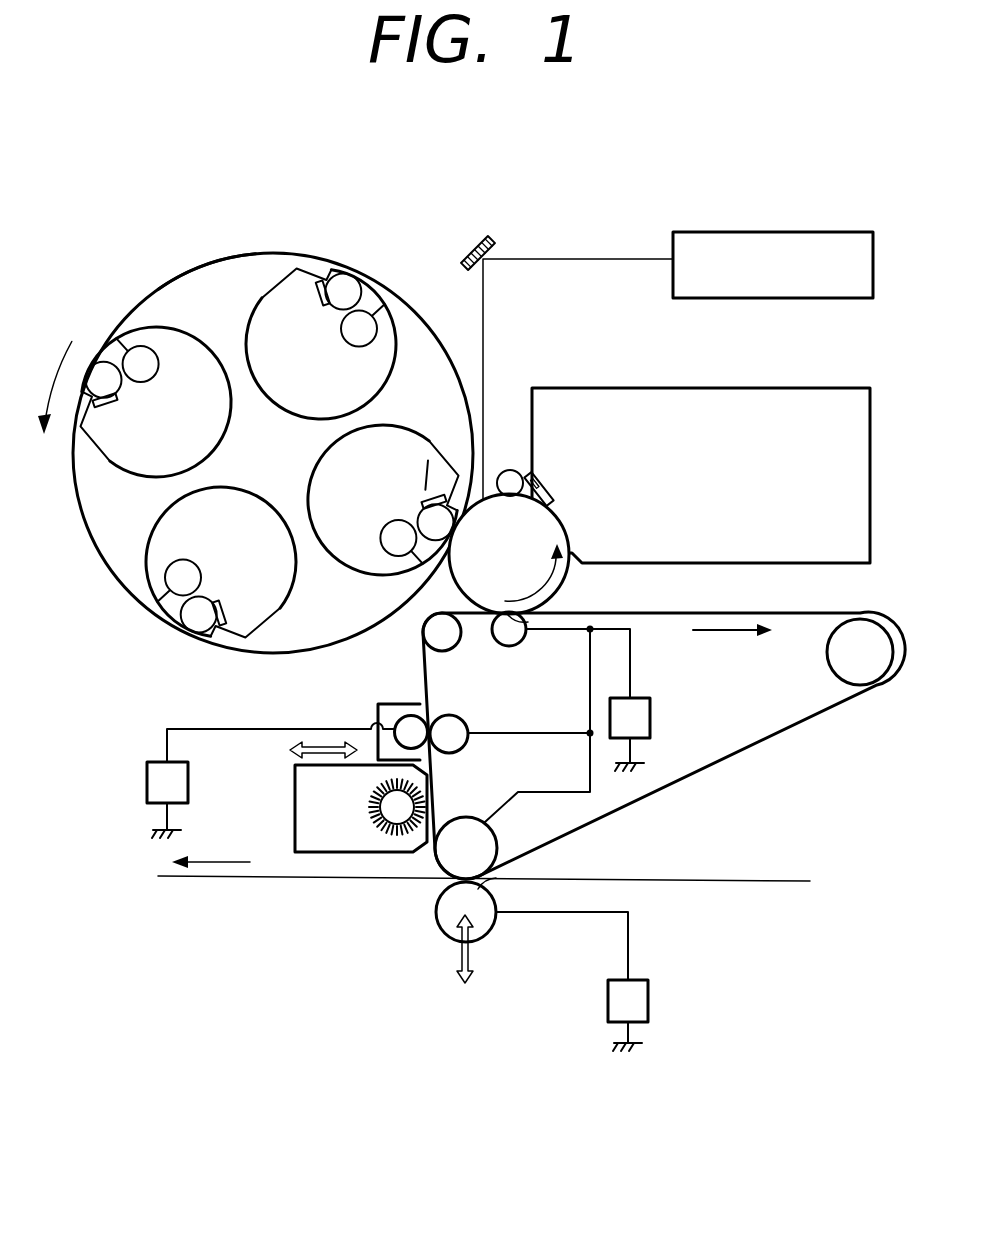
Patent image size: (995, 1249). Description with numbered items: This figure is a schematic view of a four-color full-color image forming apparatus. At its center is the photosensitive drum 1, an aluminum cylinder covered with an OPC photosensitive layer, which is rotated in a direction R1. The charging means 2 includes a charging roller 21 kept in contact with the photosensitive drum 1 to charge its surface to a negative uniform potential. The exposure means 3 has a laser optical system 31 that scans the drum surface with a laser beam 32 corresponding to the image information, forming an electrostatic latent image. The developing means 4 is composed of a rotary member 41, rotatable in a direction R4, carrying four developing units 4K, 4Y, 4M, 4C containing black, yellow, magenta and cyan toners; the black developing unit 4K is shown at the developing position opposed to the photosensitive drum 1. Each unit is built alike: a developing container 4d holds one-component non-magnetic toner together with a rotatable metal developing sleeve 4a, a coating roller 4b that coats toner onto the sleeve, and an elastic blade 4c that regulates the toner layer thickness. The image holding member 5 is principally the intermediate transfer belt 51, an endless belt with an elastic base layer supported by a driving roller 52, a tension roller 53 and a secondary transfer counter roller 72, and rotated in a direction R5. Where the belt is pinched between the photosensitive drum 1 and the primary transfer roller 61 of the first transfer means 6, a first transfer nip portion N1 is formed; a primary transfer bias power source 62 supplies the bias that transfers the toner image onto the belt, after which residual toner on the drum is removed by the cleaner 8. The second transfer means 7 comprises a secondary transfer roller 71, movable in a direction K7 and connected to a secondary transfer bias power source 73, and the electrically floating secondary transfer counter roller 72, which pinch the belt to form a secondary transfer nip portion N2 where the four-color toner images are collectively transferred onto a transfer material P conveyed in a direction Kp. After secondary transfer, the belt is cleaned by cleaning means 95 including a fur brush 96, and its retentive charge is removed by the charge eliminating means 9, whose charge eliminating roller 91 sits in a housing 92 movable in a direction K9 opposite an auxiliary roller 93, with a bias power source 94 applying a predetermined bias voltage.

The photosensitive drum 1 is at (566, 522).
The charging means 2 is at (504, 445).
The charging roller 21 is at (524, 472).
The exposure means 3 is at (667, 336).
The laser optical system 31 is at (806, 231).
The laser beam 32 is at (485, 318).
The developing means 4 is at (178, 262).
The rotary member 41 is at (247, 268).
The yellow developing unit 4Y is at (256, 309).
The cyan developing unit 4C is at (123, 452).
The magenta developing unit 4M is at (170, 535).
The black developing unit 4K is at (360, 504).
The developing sleeve 4a is at (418, 513).
The coating roller 4b is at (378, 528).
The elastic blade 4c is at (428, 458).
The developing container 4d is at (365, 565).
The image holding member 5 is at (664, 728).
The intermediate transfer belt 51 is at (733, 756).
The driving roller 52 is at (831, 669).
The tension roller 53 is at (451, 651).
The first transfer means 6 is at (607, 691).
The primary transfer roller 61 is at (519, 646).
The primary transfer bias power source 62 is at (655, 719).
The second transfer means 7 is at (543, 840).
The secondary transfer roller 71 is at (435, 903).
The secondary transfer counter roller 72 is at (471, 817).
The secondary transfer bias power source 73 is at (650, 1001).
The cleaner 8 is at (792, 398).
The charge eliminating means 9 is at (257, 755).
The charge eliminating roller 91 is at (407, 716).
The housing 92 is at (377, 715).
The auxiliary roller 93 is at (468, 723).
The bias power source 94 is at (146, 776).
The cleaning means 95 is at (282, 799).
The fur brush 96 is at (372, 808).
The first transfer nip portion N1 is at (532, 623).
The secondary transfer nip portion N2 is at (492, 891).
The rotation direction of photosensitive drum R1 is at (531, 572).
The rotation direction of rotary member R4 is at (44, 388).
The rotation direction of intermediate transfer belt R5 is at (732, 654).
The movement direction of secondary transfer roller K7 is at (445, 949).
The movement direction of housing K9 is at (302, 748).
The conveying direction of transfer material Kp is at (218, 862).
The transfer material P is at (267, 877).